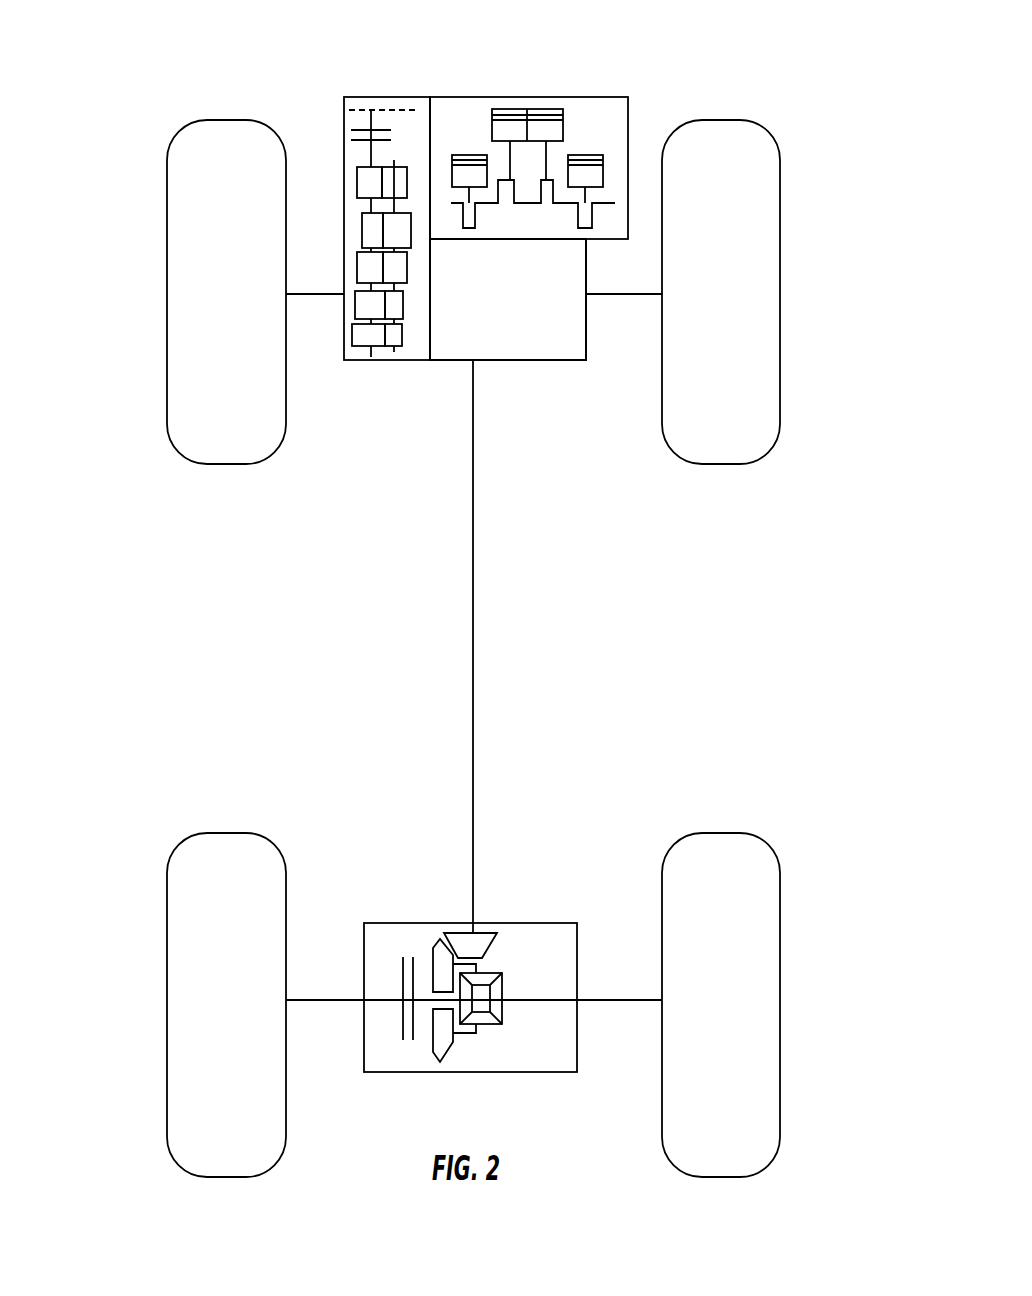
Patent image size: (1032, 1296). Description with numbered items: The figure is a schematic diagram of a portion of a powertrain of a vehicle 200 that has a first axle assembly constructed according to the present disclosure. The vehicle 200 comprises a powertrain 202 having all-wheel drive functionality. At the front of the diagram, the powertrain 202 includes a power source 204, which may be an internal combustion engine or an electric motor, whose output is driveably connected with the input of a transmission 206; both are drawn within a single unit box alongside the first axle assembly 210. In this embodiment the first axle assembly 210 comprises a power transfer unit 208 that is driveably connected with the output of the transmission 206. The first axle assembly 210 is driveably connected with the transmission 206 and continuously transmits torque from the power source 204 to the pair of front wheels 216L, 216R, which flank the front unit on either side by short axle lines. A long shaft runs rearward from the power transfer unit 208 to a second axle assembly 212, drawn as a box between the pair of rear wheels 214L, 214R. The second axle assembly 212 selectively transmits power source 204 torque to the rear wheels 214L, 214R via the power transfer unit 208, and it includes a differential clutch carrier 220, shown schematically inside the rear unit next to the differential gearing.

The vehicle 200 is at (716, 84).
The powertrain 202 is at (648, 578).
The power source 204 is at (587, 120).
The transmission 206 is at (383, 125).
The power transfer unit 208 is at (527, 335).
The first axle assembly 210 is at (590, 378).
The second axle assembly 212 is at (542, 888).
The rear wheel 214L is at (197, 897).
The rear wheel 214R is at (747, 900).
The front wheel 216L is at (185, 191).
The front wheel 216R is at (755, 177).
The differential clutch carrier 220 is at (412, 947).